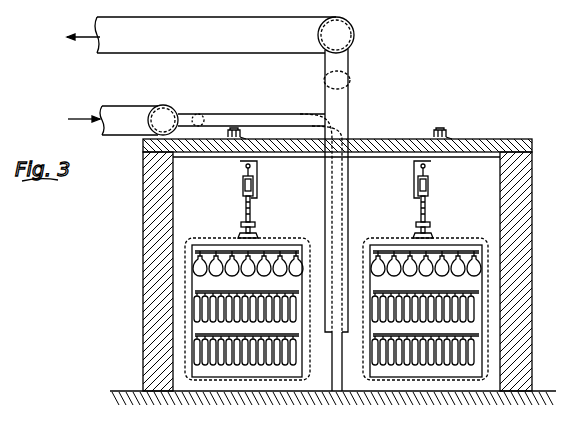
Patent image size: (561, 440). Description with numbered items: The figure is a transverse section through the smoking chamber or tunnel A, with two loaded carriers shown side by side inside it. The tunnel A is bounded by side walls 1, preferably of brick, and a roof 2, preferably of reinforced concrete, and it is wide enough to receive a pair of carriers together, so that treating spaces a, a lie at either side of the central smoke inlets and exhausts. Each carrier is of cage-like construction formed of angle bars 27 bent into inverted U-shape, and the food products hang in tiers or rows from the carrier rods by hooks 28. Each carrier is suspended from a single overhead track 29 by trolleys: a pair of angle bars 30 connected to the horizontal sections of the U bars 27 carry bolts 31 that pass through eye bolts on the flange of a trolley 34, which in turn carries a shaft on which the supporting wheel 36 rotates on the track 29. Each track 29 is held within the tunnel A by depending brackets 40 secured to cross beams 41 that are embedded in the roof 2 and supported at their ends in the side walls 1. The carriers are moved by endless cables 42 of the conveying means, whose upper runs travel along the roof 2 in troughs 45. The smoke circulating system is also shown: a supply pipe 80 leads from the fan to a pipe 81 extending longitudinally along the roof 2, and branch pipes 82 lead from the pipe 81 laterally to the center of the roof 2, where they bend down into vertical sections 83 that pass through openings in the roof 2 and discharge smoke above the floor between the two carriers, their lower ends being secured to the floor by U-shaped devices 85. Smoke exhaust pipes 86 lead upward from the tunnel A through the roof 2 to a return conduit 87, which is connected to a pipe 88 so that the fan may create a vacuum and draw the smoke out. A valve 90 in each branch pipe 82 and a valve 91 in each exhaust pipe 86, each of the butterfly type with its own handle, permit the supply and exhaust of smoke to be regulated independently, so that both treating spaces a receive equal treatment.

The side walls 1 is at (143, 199).
The roof 2 is at (486, 140).
The chamber or tunnel A is at (116, 218).
The treating spaces a is at (177, 225).
The angle bars 27 is at (212, 238).
The hooks 28 is at (213, 294).
The track 29 is at (256, 218).
The angle bars 30 is at (258, 236).
The bolts 31 is at (245, 231).
The trolley 34 is at (245, 212).
The supporting wheel 36 is at (243, 190).
The depending brackets 40 is at (259, 181).
The cross beams 41 is at (217, 158).
The endless cables 42 is at (235, 129).
The troughs 45 is at (244, 138).
The supply pipe 80 is at (124, 114).
The pipe 81 is at (165, 108).
The branch pipes 82 is at (265, 117).
The vertical sections 83 is at (345, 131).
The U-shaped devices 85 is at (334, 350).
The smoke exhaust pipes 86 is at (349, 101).
The return conduit 87 is at (355, 39).
The pipe 88 is at (222, 53).
The valve 90 is at (200, 116).
The valve 91 is at (351, 80).